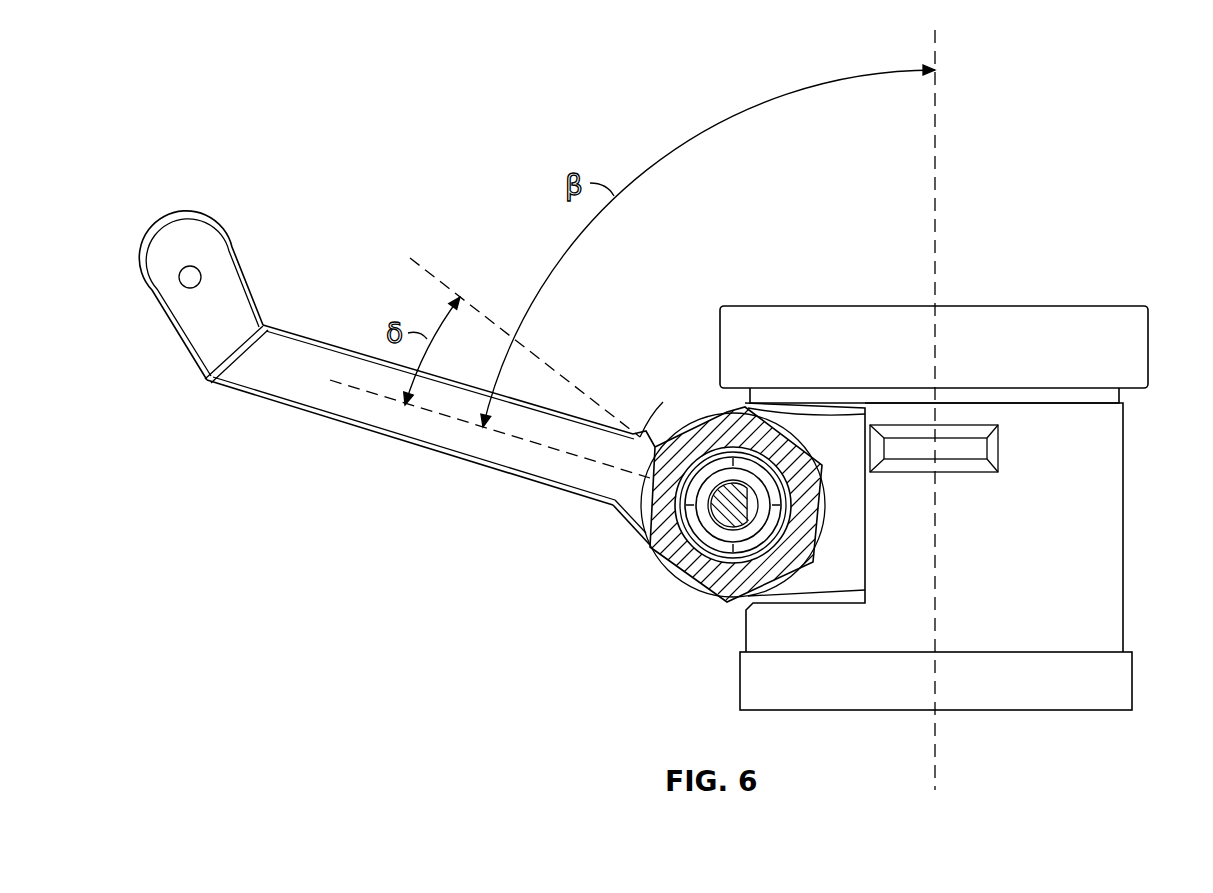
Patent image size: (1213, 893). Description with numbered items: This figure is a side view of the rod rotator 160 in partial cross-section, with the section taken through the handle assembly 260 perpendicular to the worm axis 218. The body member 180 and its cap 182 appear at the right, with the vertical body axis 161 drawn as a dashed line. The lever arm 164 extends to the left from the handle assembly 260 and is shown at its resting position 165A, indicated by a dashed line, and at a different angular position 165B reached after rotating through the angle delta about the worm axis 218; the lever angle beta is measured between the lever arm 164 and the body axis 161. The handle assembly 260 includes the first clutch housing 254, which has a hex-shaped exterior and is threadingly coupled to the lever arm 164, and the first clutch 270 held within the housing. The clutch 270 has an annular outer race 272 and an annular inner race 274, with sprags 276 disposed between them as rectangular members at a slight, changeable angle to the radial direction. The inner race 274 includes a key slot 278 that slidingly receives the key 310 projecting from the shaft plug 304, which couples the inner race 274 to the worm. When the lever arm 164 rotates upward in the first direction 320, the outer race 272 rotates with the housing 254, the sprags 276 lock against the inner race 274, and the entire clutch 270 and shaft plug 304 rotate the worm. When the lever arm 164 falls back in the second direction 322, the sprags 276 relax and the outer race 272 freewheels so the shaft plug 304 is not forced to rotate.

The rod rotator 160 is at (316, 150).
The body axis 161 is at (938, 107).
The lever arm 164 is at (425, 432).
The resting position 165A is at (343, 393).
The angular position 165B is at (437, 272).
The body member 180 is at (1125, 527).
The cap 182 is at (1005, 322).
The worm axis 218 is at (650, 533).
The first clutch housing 254 is at (660, 546).
The handle assembly 260 is at (637, 293).
The first clutch 270 is at (670, 563).
The outer race 272 is at (790, 543).
The inner race 274 is at (740, 535).
The sprags 276 is at (780, 504).
The key slot 278 is at (773, 515).
The shaft plug 304 is at (725, 488).
The key 310 is at (785, 453).
The first direction 320 is at (728, 630).
The second direction 322 is at (627, 450).